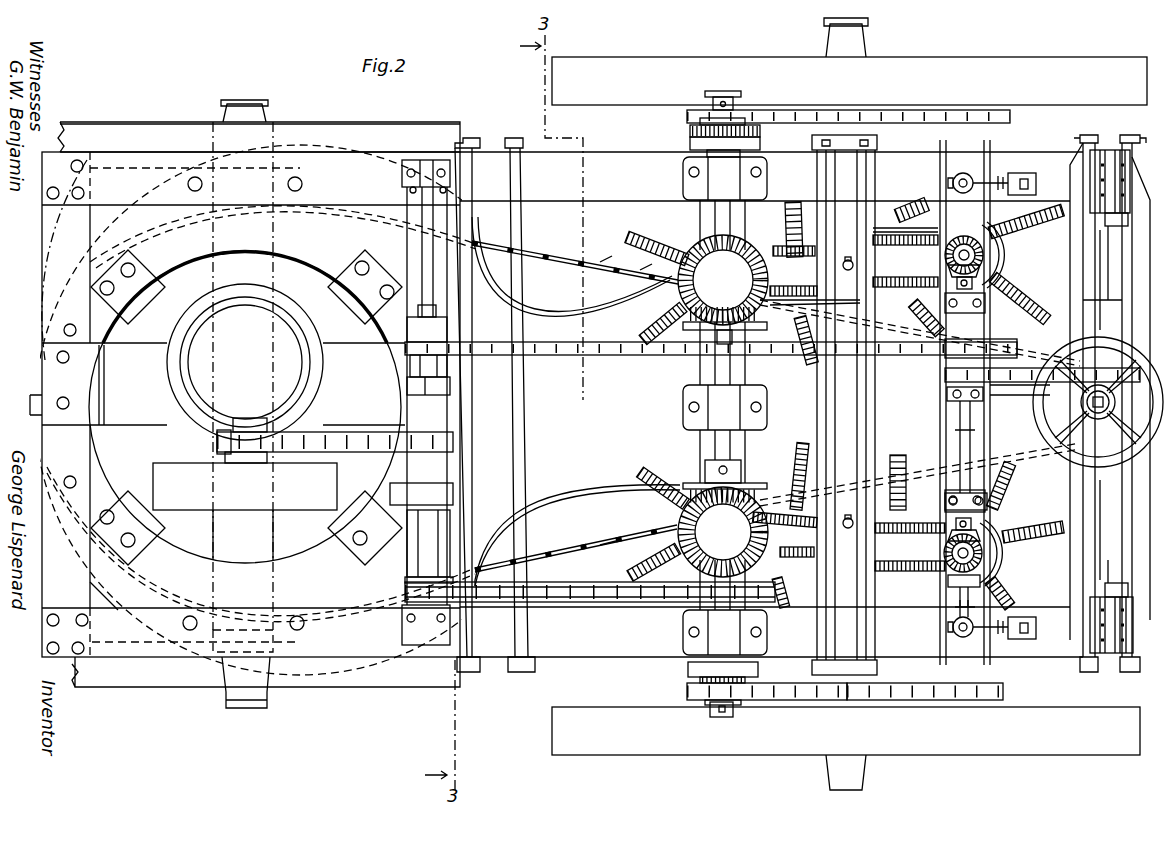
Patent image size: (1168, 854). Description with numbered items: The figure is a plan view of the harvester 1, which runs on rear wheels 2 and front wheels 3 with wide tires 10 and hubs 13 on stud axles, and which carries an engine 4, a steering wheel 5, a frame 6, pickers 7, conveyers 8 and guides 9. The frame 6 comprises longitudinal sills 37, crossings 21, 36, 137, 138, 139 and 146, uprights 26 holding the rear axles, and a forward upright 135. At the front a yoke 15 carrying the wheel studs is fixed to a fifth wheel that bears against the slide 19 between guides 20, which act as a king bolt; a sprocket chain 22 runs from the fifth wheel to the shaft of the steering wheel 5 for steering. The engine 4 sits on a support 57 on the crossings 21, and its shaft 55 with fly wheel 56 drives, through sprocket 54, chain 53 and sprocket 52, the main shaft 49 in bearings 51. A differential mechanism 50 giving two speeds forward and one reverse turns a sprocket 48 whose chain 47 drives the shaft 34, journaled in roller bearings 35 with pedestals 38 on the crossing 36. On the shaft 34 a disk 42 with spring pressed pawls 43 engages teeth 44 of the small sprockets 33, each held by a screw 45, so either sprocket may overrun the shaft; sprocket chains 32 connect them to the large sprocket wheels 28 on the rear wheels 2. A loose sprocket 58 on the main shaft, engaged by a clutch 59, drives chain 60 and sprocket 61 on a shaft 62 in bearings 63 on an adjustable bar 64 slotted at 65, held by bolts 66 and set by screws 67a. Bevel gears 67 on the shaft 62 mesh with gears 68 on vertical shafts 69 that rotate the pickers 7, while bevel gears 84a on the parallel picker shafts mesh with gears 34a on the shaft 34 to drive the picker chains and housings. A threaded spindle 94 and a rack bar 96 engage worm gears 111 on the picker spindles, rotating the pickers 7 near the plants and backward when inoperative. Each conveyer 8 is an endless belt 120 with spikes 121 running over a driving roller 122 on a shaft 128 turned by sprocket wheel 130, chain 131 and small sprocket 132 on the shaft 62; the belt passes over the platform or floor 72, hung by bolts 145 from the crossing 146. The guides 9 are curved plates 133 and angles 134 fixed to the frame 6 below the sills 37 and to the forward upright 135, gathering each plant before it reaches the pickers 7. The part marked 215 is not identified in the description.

The harvester 1 is at (239, 404).
The rear wheels 2 is at (849, 406).
The front wheels 3 is at (259, 404).
The engine 4 is at (245, 362).
The steering wheel 5 is at (1030, 422).
The frame 6 is at (771, 404).
The pickers 7 is at (620, 245).
The conveyers 8 is at (1110, 226).
The guides 9 is at (575, 312).
The wide tires 10 is at (338, 122).
The hubs 13 is at (223, 112).
The yoke 15 is at (243, 535).
The slide 19 is at (300, 410).
The guides 20 is at (246, 407).
The crossings 21 is at (425, 645).
The sprocket chain 22 is at (563, 414).
The uprights 26 is at (858, 162).
The large sprocket wheel 28 is at (700, 122).
The sprocket chains 32 is at (795, 110).
The smaller sprocket wheels 33 is at (725, 97).
The shaft 34 is at (723, 460).
The bevel gears 34a is at (758, 330).
The roller bearings 35 is at (725, 406).
The crossing 36 is at (700, 368).
The longitudinal sills 37 is at (692, 413).
The pedestals 38 is at (1003, 688).
The disk 42 is at (762, 150).
The spring pressed pawls 43 is at (700, 152).
The teeth 44 is at (760, 131).
The screw or bolt 45 is at (705, 94).
The chain 47 is at (565, 604).
The sprocket 48 is at (405, 582).
The main shaft 49 is at (484, 534).
The differential mechanism 50 is at (407, 522).
The bearings 51 is at (402, 172).
The sprocket 52 is at (390, 490).
The chain 53 is at (333, 432).
The sprocket 54 is at (217, 437).
The shaft of the engine 55 is at (250, 418).
The fly wheel 56 is at (245, 486).
The support or spring 57 is at (121, 385).
The loose sprocket 58 is at (405, 345).
The clutch 59 is at (450, 385).
The chain 60 is at (503, 342).
The sprocket 61 is at (915, 357).
The shaft 62 is at (957, 425).
The bearings 63 is at (987, 500).
The adjustable bar 64 is at (950, 620).
The slot 65 is at (925, 668).
The bolts 66 is at (965, 173).
The bevel gear 67 is at (945, 260).
The screws 67a is at (1015, 173).
The gear 68 is at (964, 591).
The vertical shaft 69 is at (1028, 568).
The platform 72 is at (611, 532).
The bevel gears 84a is at (690, 262).
The threaded spindle 94 is at (780, 287).
The rack bar 96 is at (815, 251).
The worm gear 111 is at (818, 295).
The endless belt 120 is at (1112, 150).
The spikes 121 is at (1095, 170).
The driving roller 122 is at (1060, 594).
The shaft 128 is at (1083, 301).
The sprocket wheel 130 is at (1000, 368).
The chain 131 is at (1020, 393).
The small sprocket wheel 132 is at (947, 398).
The curved plates 133 is at (587, 389).
The angles 134 is at (662, 320).
The forward upright 135 is at (515, 138).
The crossing 137 is at (520, 490).
The crossing 138 is at (858, 422).
The crossing 139 is at (1097, 405).
The bolts 145 is at (855, 384).
The crossing 146 is at (855, 194).
The wheel hub 215 is at (1081, 405).